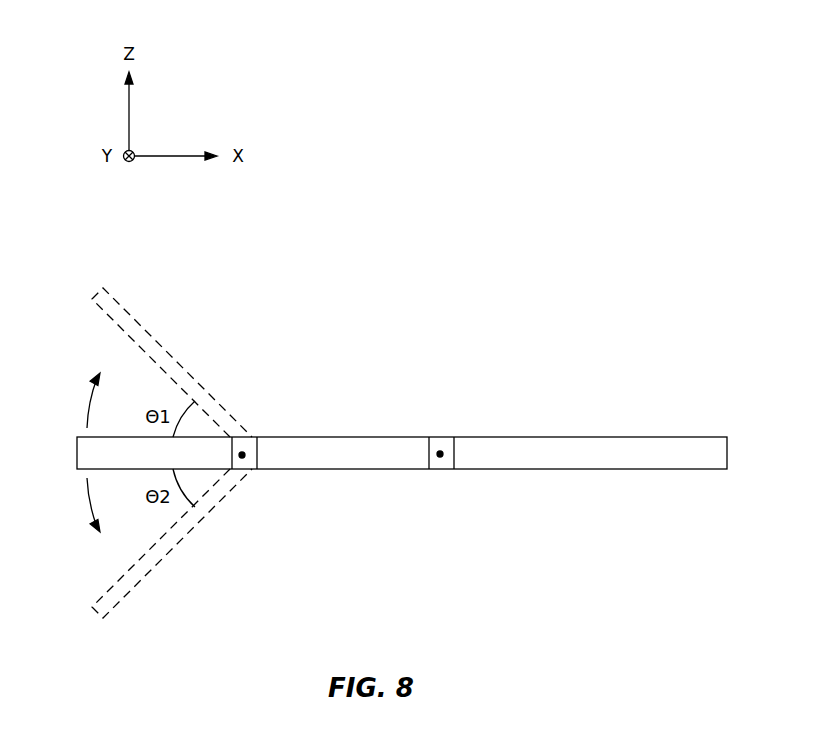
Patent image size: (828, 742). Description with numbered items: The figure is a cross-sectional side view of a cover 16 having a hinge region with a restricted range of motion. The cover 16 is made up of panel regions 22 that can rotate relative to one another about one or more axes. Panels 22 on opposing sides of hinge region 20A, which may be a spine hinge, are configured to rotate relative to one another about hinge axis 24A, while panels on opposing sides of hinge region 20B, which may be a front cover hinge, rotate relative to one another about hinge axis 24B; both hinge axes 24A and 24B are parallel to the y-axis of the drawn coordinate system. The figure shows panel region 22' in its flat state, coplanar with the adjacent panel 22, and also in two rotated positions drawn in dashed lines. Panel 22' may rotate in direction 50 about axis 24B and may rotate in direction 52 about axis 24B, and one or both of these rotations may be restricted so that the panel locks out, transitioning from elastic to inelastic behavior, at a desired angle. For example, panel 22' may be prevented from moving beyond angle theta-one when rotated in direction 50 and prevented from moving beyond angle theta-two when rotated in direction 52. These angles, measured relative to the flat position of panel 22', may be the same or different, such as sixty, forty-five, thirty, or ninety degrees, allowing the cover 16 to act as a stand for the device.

The cover 16 is at (402, 356).
The panel region 22 is at (402, 427).
The panel region 22' is at (172, 453).
The hinge region 20A is at (455, 454).
The hinge region 20B is at (258, 454).
The hinge axis 24A is at (442, 450).
The hinge axis 24B is at (244, 451).
The direction 50 is at (88, 402).
The direction 52 is at (86, 505).